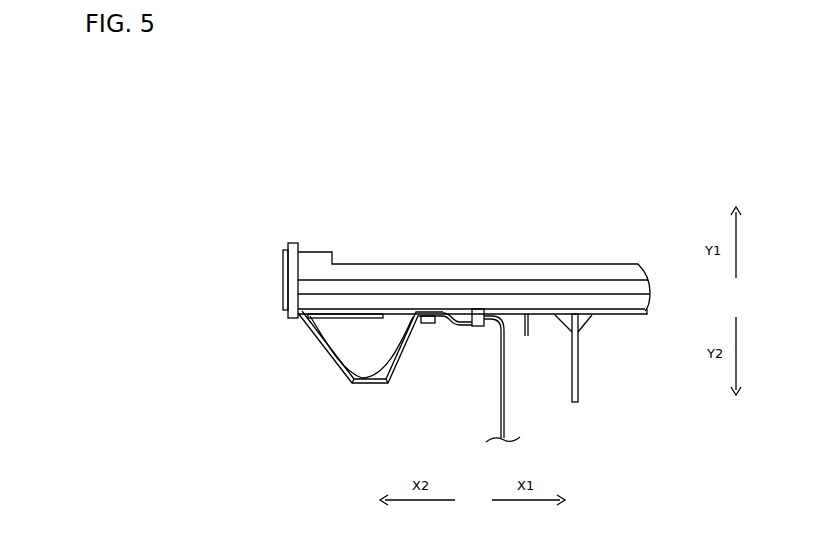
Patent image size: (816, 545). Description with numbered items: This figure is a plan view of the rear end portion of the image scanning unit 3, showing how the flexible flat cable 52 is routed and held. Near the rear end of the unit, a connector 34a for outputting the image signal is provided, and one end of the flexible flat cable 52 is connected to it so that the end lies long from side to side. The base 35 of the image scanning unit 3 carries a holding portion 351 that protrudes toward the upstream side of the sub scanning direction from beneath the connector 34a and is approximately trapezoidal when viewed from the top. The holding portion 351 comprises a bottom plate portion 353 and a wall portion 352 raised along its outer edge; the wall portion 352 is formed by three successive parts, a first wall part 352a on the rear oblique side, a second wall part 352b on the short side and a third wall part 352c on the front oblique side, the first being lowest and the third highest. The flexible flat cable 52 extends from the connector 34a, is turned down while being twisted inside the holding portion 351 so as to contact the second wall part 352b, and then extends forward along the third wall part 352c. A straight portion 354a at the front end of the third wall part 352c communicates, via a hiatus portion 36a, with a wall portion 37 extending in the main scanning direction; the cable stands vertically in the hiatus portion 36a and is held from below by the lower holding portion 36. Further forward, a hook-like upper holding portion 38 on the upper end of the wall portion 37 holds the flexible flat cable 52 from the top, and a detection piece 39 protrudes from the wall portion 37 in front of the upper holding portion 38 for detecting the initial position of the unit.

The image scanning unit 3 is at (507, 233).
The base 35 is at (633, 319).
The holding portion 351 is at (300, 333).
The wall portion 352 is at (365, 398).
The first wall part 352a is at (337, 368).
The second wall part 352b is at (367, 385).
The third wall part 352c is at (410, 381).
The bottom plate portion 353 is at (395, 312).
The straight portion 354a is at (423, 325).
The connector 34a is at (317, 343).
The lower holding portion 36 is at (437, 325).
The hiatus portion 36a is at (443, 311).
The wall portion 37 is at (527, 318).
The upper holding portion 38 is at (480, 328).
The detection piece 39 is at (580, 371).
The flexible flat cable 52 is at (508, 388).